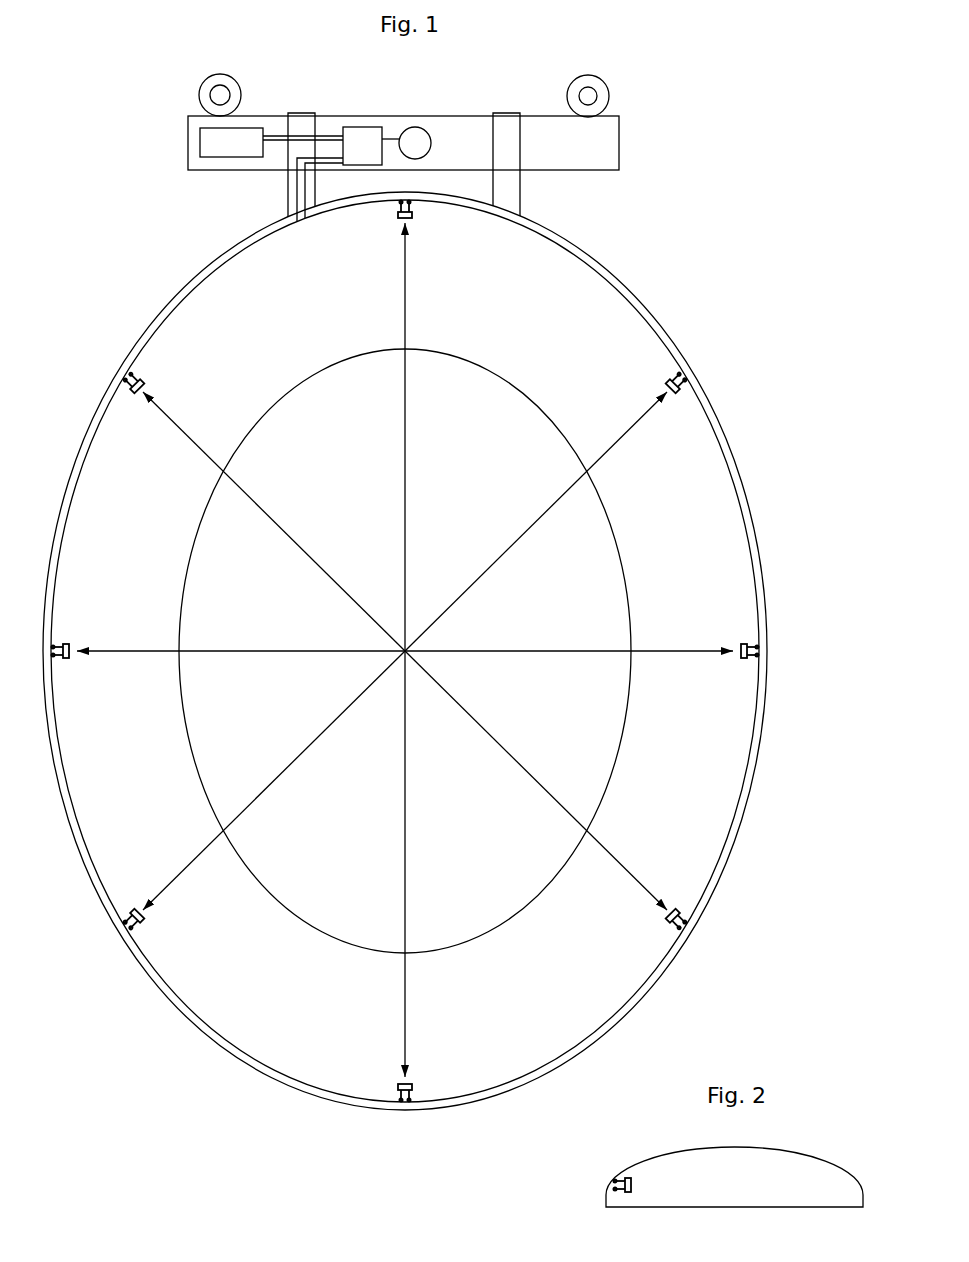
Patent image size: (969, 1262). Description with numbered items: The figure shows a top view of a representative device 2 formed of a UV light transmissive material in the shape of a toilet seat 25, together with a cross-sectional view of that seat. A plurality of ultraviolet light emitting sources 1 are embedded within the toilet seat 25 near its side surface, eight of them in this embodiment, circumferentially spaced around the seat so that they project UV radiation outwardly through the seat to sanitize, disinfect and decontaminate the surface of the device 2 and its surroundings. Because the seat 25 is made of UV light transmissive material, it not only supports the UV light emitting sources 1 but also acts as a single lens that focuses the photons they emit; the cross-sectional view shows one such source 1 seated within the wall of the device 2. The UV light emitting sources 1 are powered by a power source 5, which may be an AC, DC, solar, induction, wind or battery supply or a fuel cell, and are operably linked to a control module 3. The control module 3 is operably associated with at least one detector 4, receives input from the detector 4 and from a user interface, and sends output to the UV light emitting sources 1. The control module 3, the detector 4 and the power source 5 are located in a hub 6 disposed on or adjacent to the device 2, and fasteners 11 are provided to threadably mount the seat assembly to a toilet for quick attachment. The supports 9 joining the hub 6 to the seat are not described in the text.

In FIG. 1, the ultraviolet light emitting source 1 is at (405, 651).
In FIG. 2, the ultraviolet light emitting source 1 is at (619, 1193).
In FIG. 1, the device 2 is at (688, 292).
In FIG. 2, the device 2 is at (778, 1138).
In FIG. 1, the control module 3 is at (355, 132).
In FIG. 1, the detector 4 is at (413, 132).
In FIG. 1, the power source 5 is at (217, 141).
In FIG. 1, the hub 6 is at (588, 152).
In FIG. 1, the support post 9 is at (495, 108).
In FIG. 1, the fastener 11 is at (593, 92).
In FIG. 1, the toilet seat 25 is at (248, 1067).